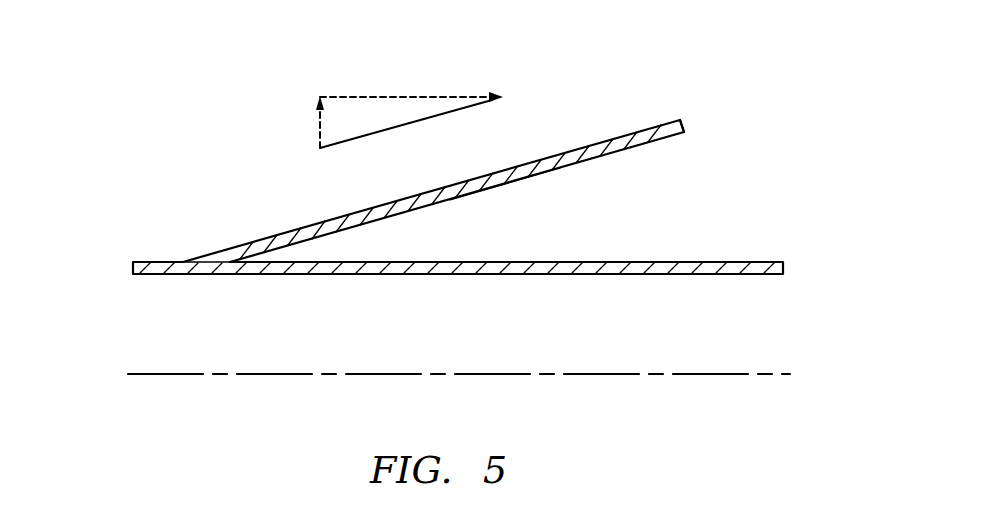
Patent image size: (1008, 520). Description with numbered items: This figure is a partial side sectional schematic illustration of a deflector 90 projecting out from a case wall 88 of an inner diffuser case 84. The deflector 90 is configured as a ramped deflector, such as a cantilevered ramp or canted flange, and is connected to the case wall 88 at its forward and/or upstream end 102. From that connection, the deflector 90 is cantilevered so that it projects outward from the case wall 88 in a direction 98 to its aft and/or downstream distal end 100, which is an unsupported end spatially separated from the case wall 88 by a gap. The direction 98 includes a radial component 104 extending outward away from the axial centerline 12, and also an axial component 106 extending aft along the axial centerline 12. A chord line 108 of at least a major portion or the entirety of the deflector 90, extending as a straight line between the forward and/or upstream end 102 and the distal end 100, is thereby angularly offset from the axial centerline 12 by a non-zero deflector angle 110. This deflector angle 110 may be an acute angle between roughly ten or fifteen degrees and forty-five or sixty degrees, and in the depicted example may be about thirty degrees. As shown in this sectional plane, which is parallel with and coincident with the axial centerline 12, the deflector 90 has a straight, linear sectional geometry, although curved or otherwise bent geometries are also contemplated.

The axial centerline 12 is at (781, 376).
The inner diffuser case 84 is at (406, 297).
The case wall 88 is at (162, 287).
The deflector 90 is at (558, 143).
The direction 98 is at (404, 130).
The distal end 100 is at (685, 125).
The forward and/or upstream end 102 is at (212, 254).
The radial component 104 is at (318, 125).
The axial component 106 is at (392, 96).
The chord line 108 is at (512, 181).
The deflector angle 110 is at (437, 216).